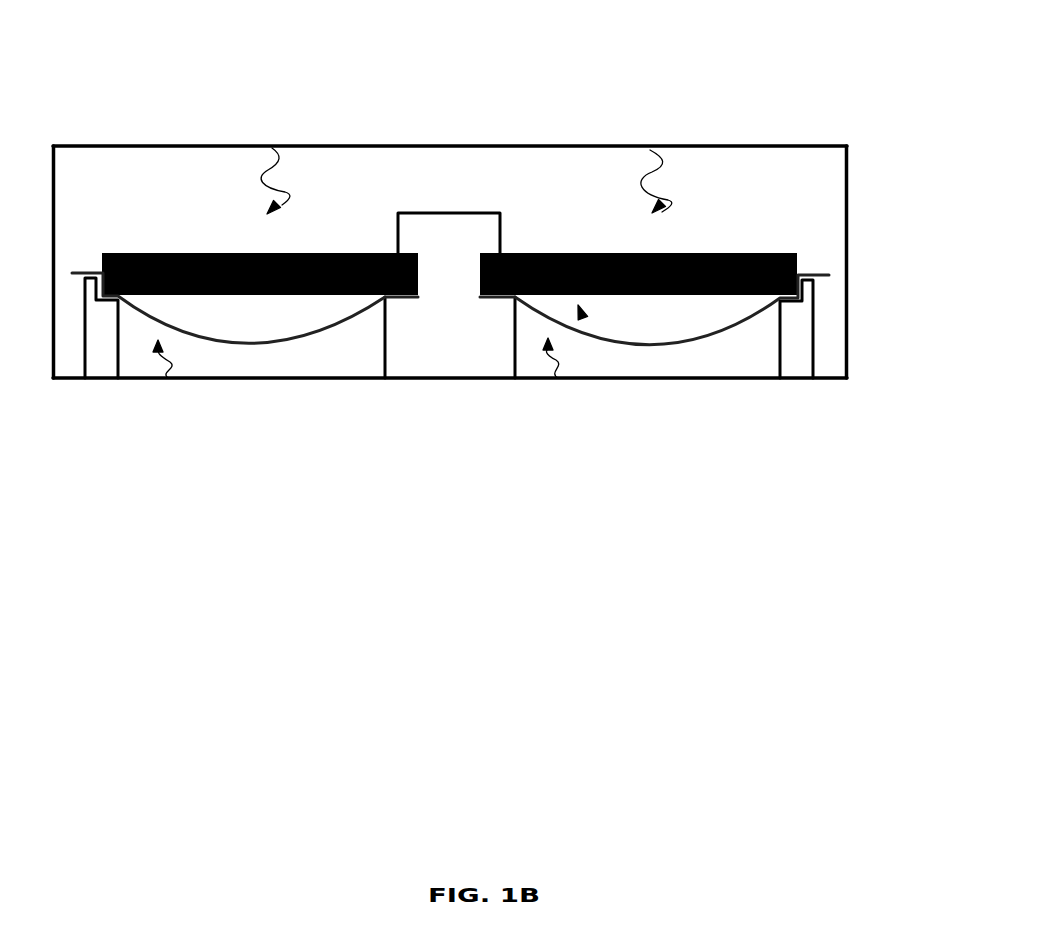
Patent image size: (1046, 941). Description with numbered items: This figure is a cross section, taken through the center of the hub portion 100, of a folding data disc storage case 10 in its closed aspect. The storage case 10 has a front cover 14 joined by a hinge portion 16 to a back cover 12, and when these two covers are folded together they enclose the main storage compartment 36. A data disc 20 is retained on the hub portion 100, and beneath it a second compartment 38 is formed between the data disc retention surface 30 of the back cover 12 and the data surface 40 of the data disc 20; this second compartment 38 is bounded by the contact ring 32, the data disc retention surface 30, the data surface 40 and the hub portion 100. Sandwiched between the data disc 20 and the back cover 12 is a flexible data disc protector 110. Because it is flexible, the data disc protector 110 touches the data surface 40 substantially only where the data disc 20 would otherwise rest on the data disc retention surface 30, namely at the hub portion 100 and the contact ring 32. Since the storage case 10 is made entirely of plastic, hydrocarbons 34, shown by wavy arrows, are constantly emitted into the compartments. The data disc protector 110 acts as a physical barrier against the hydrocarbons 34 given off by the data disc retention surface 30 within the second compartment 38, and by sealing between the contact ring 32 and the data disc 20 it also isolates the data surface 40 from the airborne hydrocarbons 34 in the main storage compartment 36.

The storage case 10 is at (603, 100).
The back cover 12 is at (667, 379).
The front cover 14 is at (749, 147).
The hinge portion 16 is at (848, 212).
The data disc 20 is at (322, 253).
The data disc retention surface 30 is at (198, 378).
The contact ring 32 is at (102, 328).
The hydrocarbons 34 is at (290, 198).
The storage compartment 36 is at (145, 182).
The second compartment 38 is at (253, 360).
The data surface 40 is at (580, 310).
The hub portion 100 is at (450, 347).
The data disc protector 110 is at (317, 333).